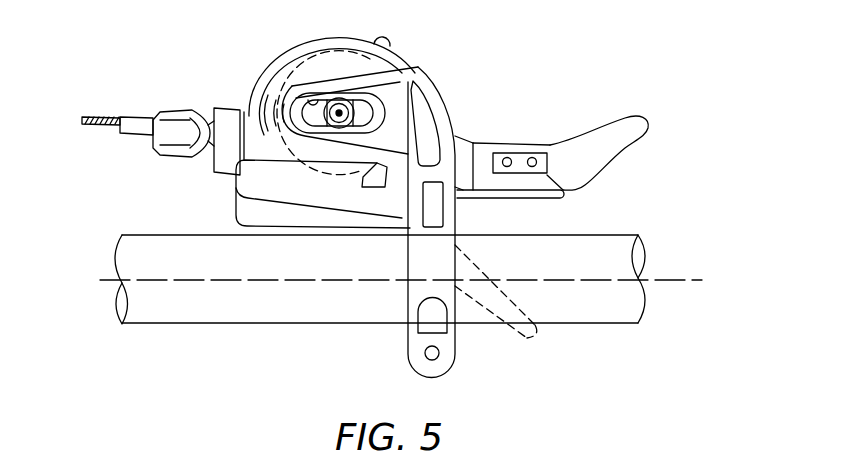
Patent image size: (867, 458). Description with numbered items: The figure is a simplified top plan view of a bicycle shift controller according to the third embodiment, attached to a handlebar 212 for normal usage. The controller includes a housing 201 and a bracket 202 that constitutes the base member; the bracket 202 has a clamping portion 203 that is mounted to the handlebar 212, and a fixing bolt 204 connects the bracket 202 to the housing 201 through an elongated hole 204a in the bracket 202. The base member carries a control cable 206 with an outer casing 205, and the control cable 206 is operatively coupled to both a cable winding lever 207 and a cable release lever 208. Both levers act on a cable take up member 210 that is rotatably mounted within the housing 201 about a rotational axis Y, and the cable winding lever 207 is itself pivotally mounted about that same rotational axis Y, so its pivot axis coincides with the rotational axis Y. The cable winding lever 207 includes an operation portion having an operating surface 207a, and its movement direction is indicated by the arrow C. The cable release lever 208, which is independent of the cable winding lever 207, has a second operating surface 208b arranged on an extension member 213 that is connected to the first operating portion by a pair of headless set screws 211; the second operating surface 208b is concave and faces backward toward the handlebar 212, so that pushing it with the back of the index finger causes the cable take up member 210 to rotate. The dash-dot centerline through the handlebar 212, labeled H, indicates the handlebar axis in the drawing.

The housing 201 is at (275, 72).
The bracket 202 is at (438, 116).
The clamping portion 203 is at (418, 289).
The fixing bolt 204 is at (338, 104).
The elongated hole 204a is at (309, 105).
The outer casing 205 is at (135, 135).
The control cable 206 is at (99, 117).
The cable winding lever 207 is at (523, 337).
The operating surface 207a is at (480, 312).
The cable release lever 208 is at (636, 166).
The second operating surface 208b is at (612, 168).
The cable take up member 210 is at (392, 58).
The headless set screws 211 is at (533, 157).
The handlebar 212 is at (617, 300).
The extension member 213 is at (606, 133).
The rotational axis Y is at (349, 103).
The handlebar axis H is at (411, 282).
The direction of rotation C is at (542, 284).